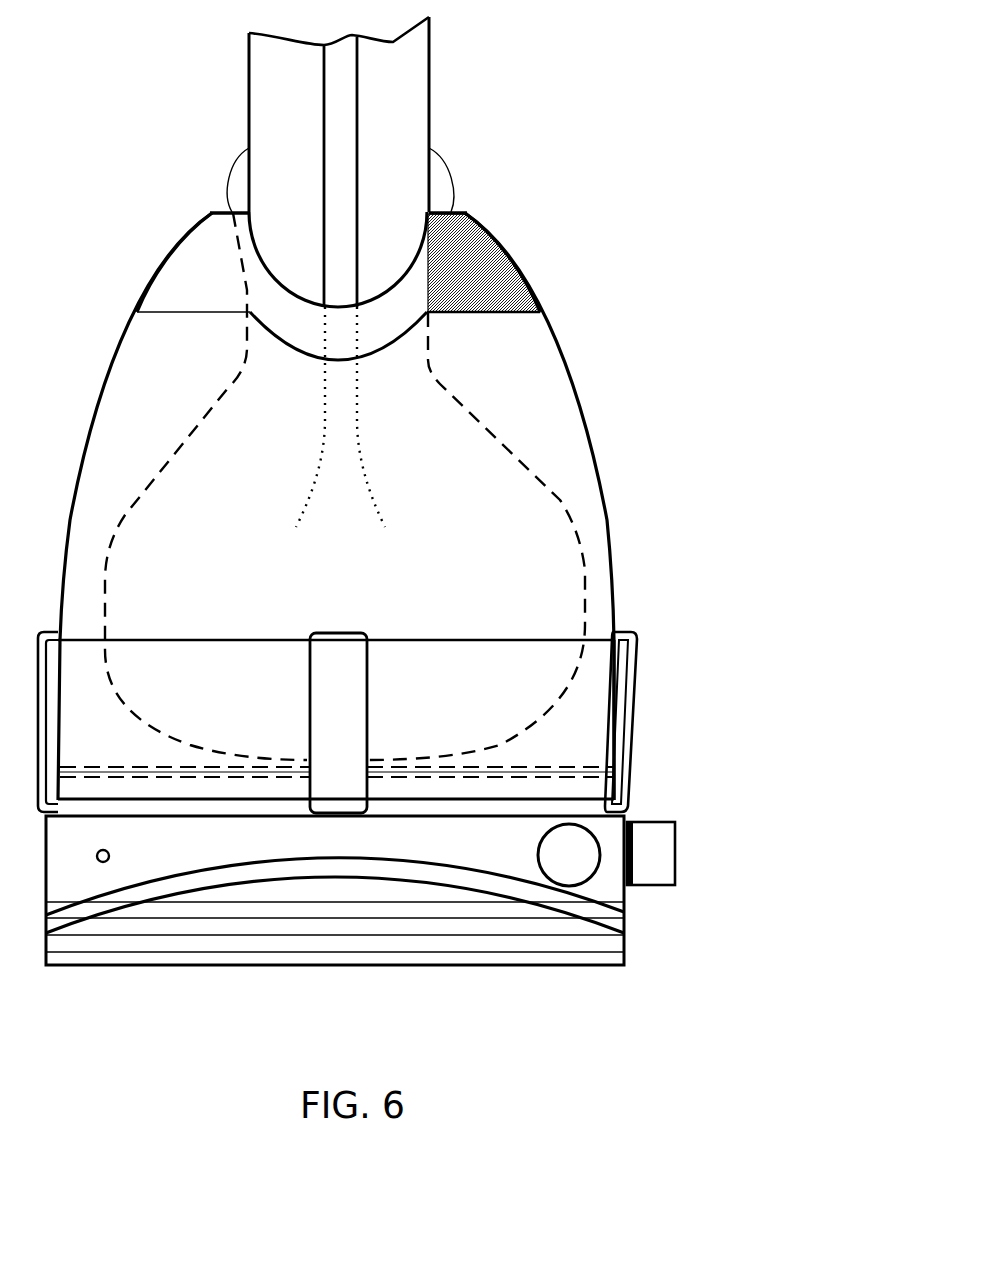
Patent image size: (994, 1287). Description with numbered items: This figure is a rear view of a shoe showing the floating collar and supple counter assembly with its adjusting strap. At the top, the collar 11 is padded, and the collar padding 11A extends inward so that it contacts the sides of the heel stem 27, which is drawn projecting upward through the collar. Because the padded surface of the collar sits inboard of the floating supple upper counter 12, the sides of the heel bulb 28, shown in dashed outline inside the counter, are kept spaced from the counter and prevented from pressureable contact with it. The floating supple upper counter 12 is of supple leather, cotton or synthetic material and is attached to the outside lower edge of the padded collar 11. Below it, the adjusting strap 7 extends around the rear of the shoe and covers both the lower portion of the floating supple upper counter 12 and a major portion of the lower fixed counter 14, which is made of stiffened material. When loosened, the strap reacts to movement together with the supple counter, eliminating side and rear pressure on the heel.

The heel stem 27 is at (378, 77).
The collar 11 is at (485, 233).
The collar padding 11A is at (490, 287).
The heel bulb 28 is at (543, 479).
The floating supple upper counter 12 is at (612, 589).
The adjusting strap 7 is at (517, 643).
The lower fixed counter 14 is at (547, 778).